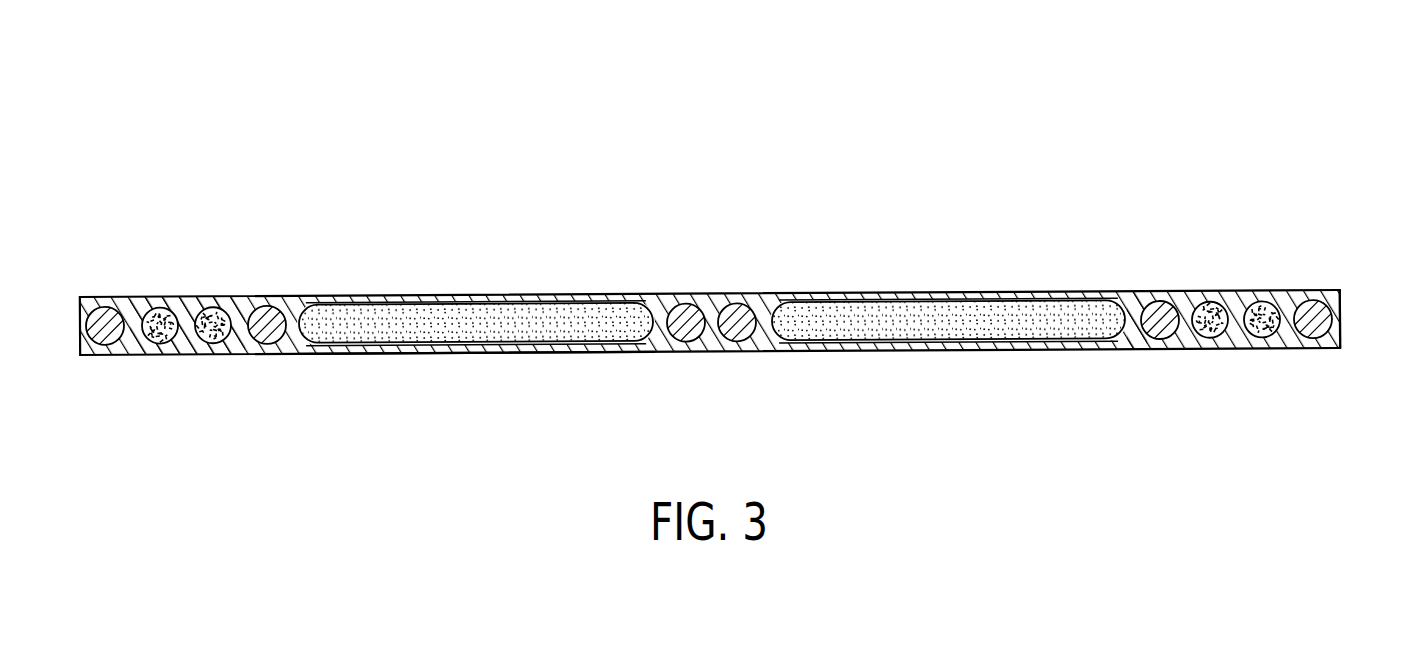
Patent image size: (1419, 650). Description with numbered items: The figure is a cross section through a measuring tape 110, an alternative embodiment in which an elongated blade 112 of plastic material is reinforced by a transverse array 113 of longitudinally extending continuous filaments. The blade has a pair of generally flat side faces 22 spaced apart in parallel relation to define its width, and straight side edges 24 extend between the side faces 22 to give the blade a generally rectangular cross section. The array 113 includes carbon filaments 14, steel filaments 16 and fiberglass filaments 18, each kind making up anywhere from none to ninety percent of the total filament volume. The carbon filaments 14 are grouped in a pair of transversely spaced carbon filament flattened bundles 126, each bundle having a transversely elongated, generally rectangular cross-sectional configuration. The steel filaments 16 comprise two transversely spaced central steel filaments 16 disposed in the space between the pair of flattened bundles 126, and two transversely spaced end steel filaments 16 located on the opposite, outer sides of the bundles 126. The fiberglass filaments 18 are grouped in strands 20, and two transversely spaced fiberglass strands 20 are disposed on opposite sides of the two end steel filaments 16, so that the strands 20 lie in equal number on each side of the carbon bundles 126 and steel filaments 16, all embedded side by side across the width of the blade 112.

The carbon filaments 14 is at (589, 328).
The steel filaments 16 is at (103, 313).
The fiberglass filaments 18 is at (161, 338).
The strands 20 is at (178, 297).
The side faces 22 is at (352, 356).
The side edges 24 is at (1342, 318).
The measuring tape 110 is at (998, 140).
The elongated blade 112 is at (1138, 300).
The transverse array 113 is at (878, 237).
The carbon filament flattened bundles 126 is at (449, 358).